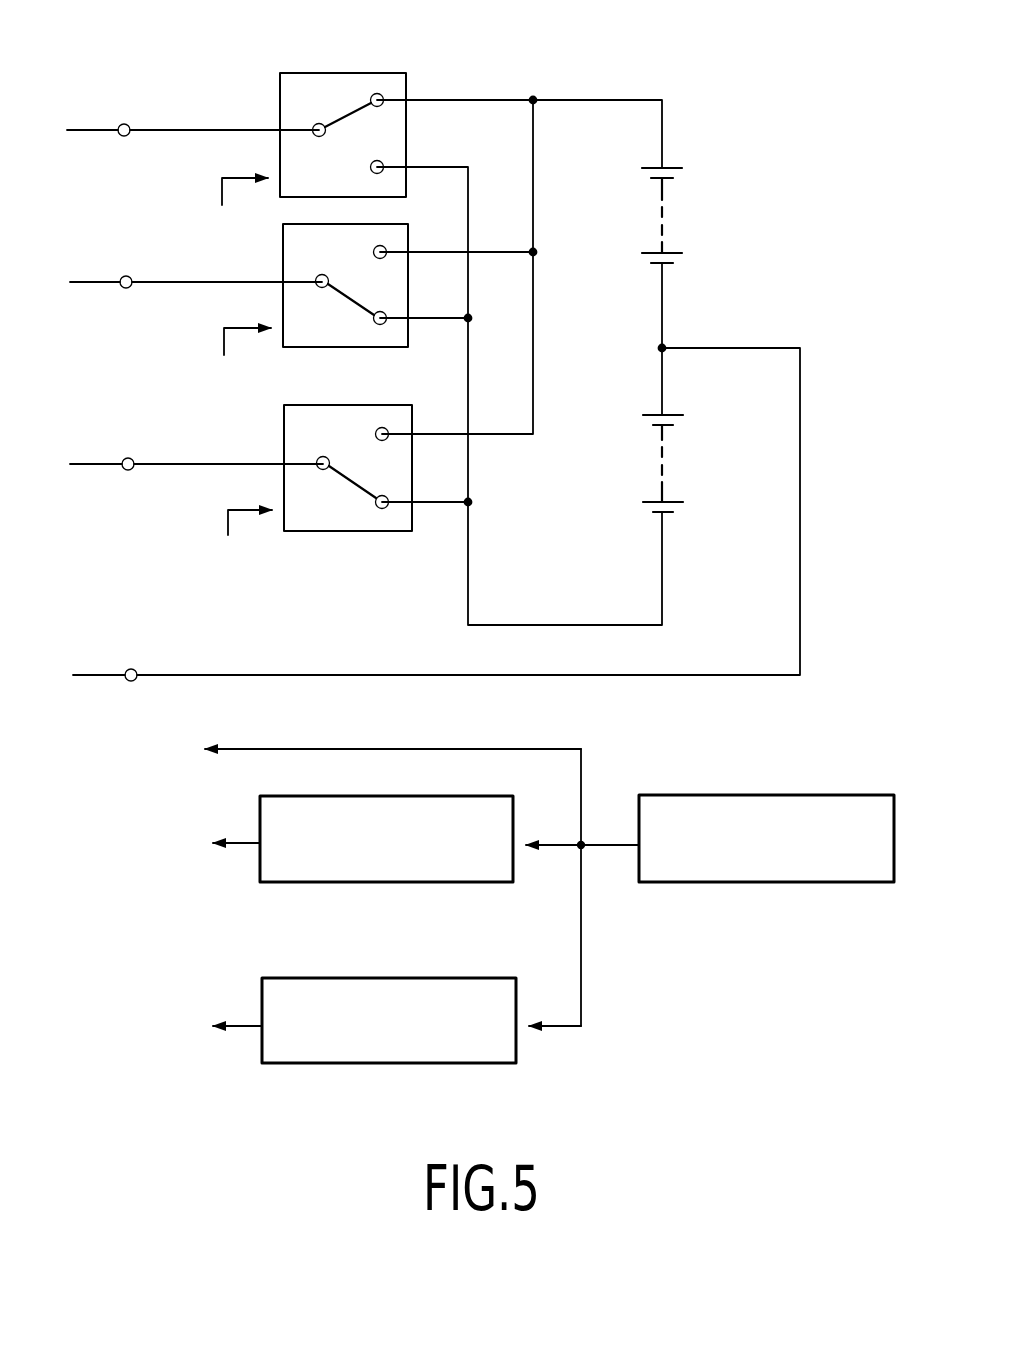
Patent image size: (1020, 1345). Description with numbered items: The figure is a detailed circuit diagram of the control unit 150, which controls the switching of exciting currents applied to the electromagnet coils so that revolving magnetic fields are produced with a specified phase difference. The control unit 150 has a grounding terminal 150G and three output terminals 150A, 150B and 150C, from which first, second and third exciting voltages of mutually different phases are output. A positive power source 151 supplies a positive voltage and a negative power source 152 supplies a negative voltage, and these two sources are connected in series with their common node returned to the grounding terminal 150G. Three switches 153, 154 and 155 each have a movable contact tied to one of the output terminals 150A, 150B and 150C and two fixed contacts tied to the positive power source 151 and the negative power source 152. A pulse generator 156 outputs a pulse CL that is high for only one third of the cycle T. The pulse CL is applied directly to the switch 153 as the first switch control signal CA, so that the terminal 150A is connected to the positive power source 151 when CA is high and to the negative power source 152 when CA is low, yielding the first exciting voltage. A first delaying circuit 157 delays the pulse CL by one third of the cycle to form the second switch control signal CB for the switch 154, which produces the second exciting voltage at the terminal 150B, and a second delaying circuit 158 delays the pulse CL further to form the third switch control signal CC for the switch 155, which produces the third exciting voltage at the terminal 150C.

The control unit 150 is at (692, 110).
The output terminal 150A is at (123, 137).
The output terminal 150B is at (125, 289).
The output terminal 150C is at (127, 471).
The grounding terminal 150G is at (130, 682).
The positive power source 151 is at (663, 212).
The negative power source 152 is at (663, 460).
The switch 153 is at (380, 72).
The switch 154 is at (335, 347).
The switch 155 is at (367, 531).
The pulse generator 156 is at (776, 882).
The first delaying circuit 157 is at (425, 882).
The second delaying circuit 158 is at (428, 1063).